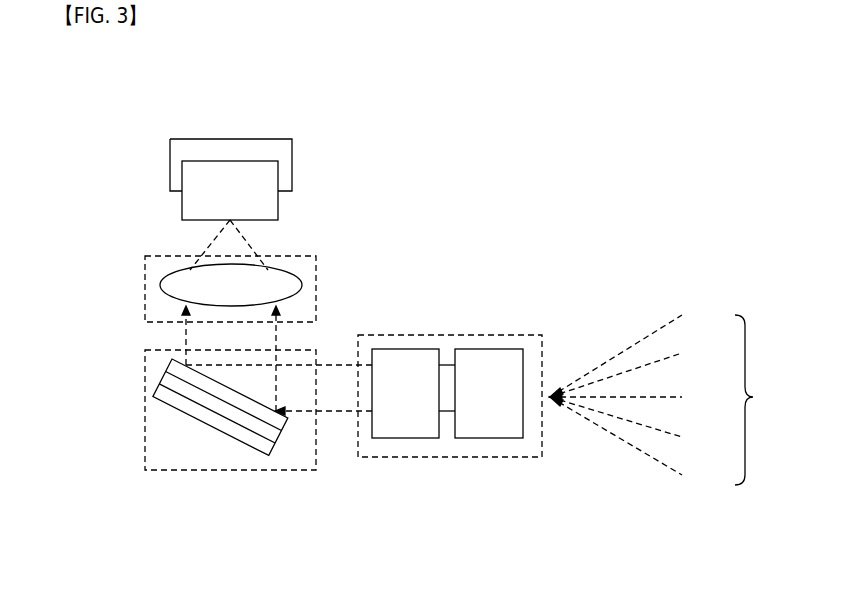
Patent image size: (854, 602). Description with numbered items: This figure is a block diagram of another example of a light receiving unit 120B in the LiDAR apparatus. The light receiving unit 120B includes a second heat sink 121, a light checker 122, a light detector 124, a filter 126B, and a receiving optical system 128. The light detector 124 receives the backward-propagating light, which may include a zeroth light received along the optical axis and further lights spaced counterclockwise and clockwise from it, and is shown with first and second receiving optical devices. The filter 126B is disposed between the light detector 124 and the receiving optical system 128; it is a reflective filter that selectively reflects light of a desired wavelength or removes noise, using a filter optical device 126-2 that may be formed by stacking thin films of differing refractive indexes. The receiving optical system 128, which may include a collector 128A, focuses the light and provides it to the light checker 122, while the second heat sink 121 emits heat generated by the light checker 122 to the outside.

The light receiving unit 120B is at (567, 150).
The second heat sink 121 is at (263, 145).
The light checker 122 is at (270, 204).
The light detector 124 is at (432, 458).
The filter optical device 126-2 is at (192, 408).
The filter 126B is at (230, 444).
The receiving optical system 128 is at (262, 276).
The collector 128A is at (273, 283).